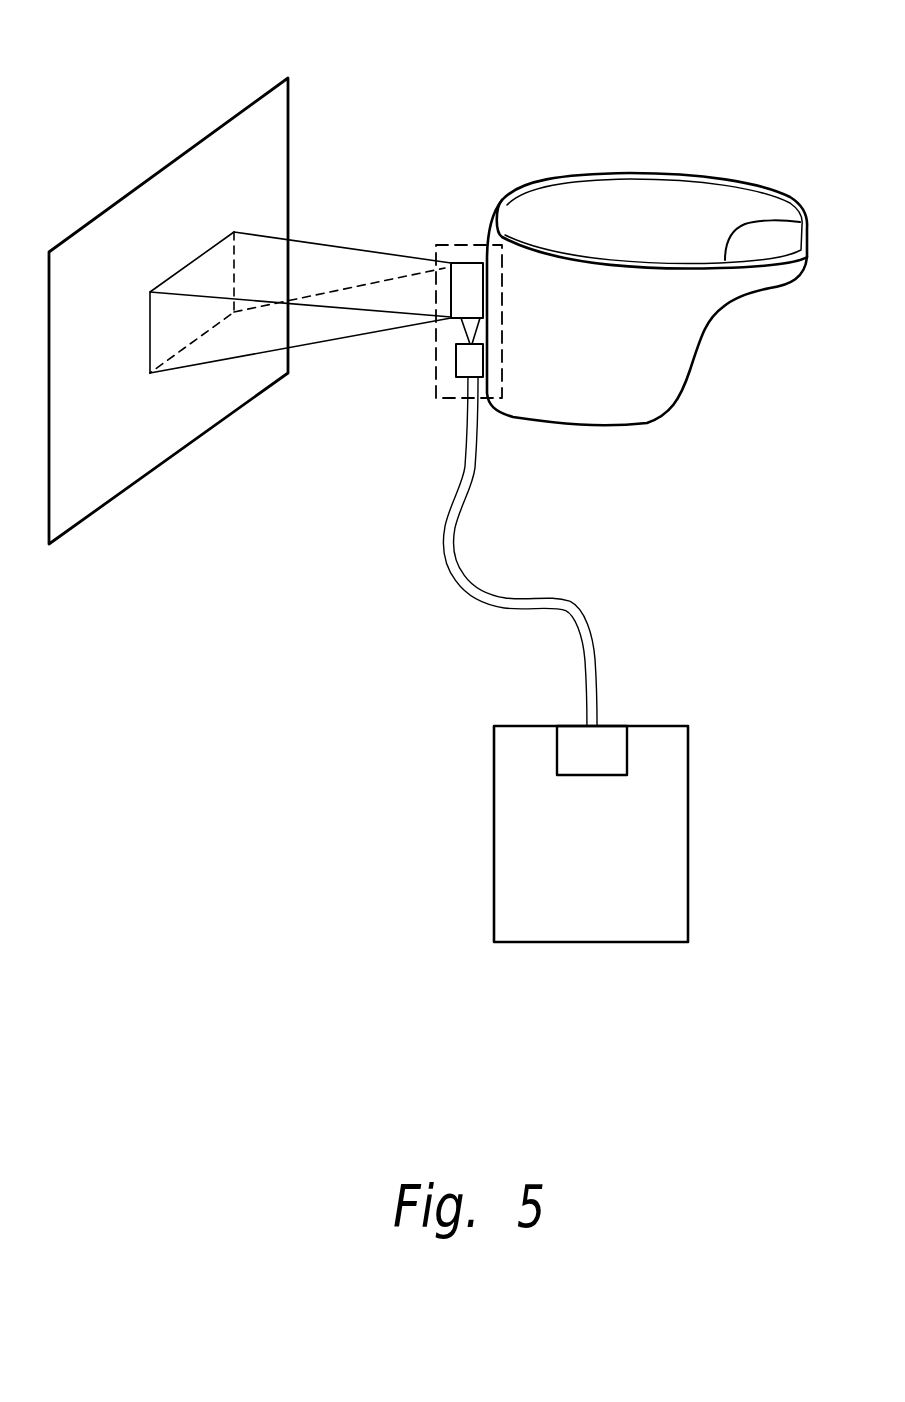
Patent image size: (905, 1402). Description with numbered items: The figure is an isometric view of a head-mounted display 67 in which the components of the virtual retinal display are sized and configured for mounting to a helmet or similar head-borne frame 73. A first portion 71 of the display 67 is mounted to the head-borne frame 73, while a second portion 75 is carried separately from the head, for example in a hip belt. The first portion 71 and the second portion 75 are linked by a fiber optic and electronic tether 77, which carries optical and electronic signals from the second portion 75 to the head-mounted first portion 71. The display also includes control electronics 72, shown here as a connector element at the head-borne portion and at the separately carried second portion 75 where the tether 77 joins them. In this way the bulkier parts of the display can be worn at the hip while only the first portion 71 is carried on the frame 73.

The head-mounted display 67 is at (726, 117).
The first portion 71 is at (436, 353).
The control electronics 72 is at (464, 380).
The head-borne frame 73 is at (505, 203).
The second portion 75 is at (494, 830).
The fiber optic and electronic tether 77 is at (573, 603).